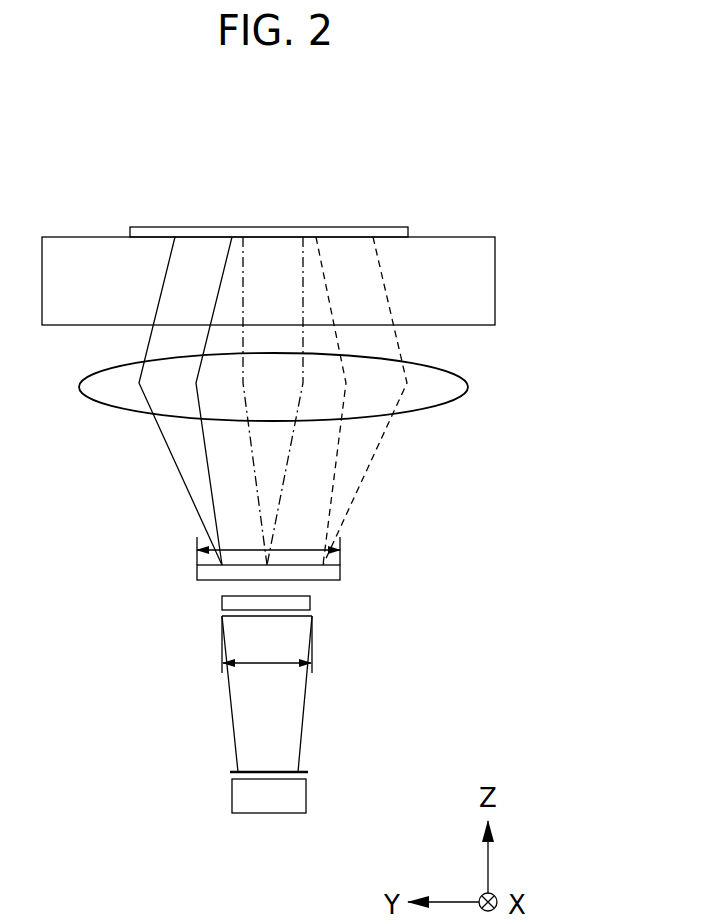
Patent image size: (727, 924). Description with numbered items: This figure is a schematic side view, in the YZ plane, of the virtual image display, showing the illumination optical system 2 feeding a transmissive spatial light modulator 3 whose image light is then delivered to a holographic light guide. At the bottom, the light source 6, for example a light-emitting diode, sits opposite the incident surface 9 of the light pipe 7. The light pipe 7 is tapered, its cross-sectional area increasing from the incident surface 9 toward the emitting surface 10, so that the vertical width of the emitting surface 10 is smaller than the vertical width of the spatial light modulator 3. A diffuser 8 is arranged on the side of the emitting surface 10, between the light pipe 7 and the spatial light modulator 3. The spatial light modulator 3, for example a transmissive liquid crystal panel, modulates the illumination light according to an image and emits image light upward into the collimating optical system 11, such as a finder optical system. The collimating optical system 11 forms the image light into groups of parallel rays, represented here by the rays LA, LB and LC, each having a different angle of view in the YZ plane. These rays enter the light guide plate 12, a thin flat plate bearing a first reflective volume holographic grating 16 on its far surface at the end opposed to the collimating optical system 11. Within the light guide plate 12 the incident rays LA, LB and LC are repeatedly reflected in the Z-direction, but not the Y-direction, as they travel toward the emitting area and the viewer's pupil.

The illumination optical system 2 is at (250, 732).
The spatial light modulator 3 is at (332, 572).
The light source 6 is at (268, 806).
The light pipe 7 is at (300, 707).
The diffuser 8 is at (305, 603).
The incident surface 9 is at (312, 772).
The emitting surface 10 is at (320, 626).
The collimating optical system 11 is at (425, 410).
The light guide plate 12 is at (490, 286).
The first reflective volume holographic grating 16 is at (348, 227).
The parallel ray LA is at (165, 279).
The parallel ray LB is at (302, 279).
The parallel ray LC is at (388, 280).